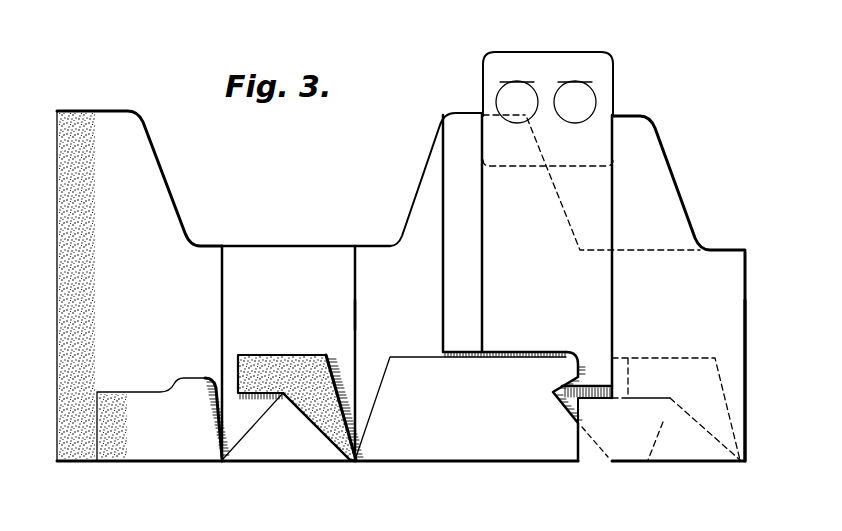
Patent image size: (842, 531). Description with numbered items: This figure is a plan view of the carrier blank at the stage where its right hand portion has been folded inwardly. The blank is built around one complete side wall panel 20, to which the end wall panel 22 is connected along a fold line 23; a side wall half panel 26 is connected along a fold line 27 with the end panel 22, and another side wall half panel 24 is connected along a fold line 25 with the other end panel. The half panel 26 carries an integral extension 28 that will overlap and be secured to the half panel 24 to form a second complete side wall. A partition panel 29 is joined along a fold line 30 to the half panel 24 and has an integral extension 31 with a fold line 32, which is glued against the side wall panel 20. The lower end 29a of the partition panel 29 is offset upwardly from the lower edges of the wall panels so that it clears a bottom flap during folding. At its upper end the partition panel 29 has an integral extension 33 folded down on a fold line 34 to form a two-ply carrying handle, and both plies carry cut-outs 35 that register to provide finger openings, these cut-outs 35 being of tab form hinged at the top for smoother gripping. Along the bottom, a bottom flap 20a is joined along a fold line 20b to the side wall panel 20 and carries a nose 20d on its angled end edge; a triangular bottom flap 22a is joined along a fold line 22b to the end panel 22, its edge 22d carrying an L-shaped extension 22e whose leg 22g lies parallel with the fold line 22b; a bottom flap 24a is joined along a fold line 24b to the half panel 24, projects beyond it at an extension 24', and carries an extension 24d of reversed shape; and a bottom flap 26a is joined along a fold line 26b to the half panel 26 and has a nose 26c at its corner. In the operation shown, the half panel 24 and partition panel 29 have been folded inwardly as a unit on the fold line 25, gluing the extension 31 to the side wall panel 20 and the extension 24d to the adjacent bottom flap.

The side wall panel 20 is at (383, 353).
The bottom flap 20a is at (460, 408).
The fold line 20b is at (497, 462).
The nose 20d is at (562, 368).
The end wall panel 22 is at (306, 273).
The bottom flap 22a is at (262, 426).
The fold line 22b is at (285, 462).
The end edge 22d is at (332, 440).
The extension 22e is at (330, 338).
The leg 22g is at (272, 340).
The fold line 23 is at (356, 316).
The side wall half panel 24 is at (678, 356).
The extension 24' is at (567, 423).
The bottom flap 24a is at (655, 462).
The fold line 24b is at (718, 462).
The extension 24d is at (690, 368).
The fold line 25 is at (750, 352).
The side wall half panel 26 is at (139, 286).
The bottom flap 26a is at (151, 419).
The fold line 26b is at (170, 462).
The nose 26c is at (190, 380).
The fold line 27 is at (222, 280).
The extension 28 is at (66, 225).
The partition panel 29 is at (504, 233).
The lower end 29a is at (512, 352).
The fold line 30 is at (613, 228).
The extension 31 is at (443, 224).
The fold line 32 is at (482, 232).
The extension 33 is at (600, 68).
The fold line 34 is at (560, 53).
The cut-outs 35 is at (577, 92).